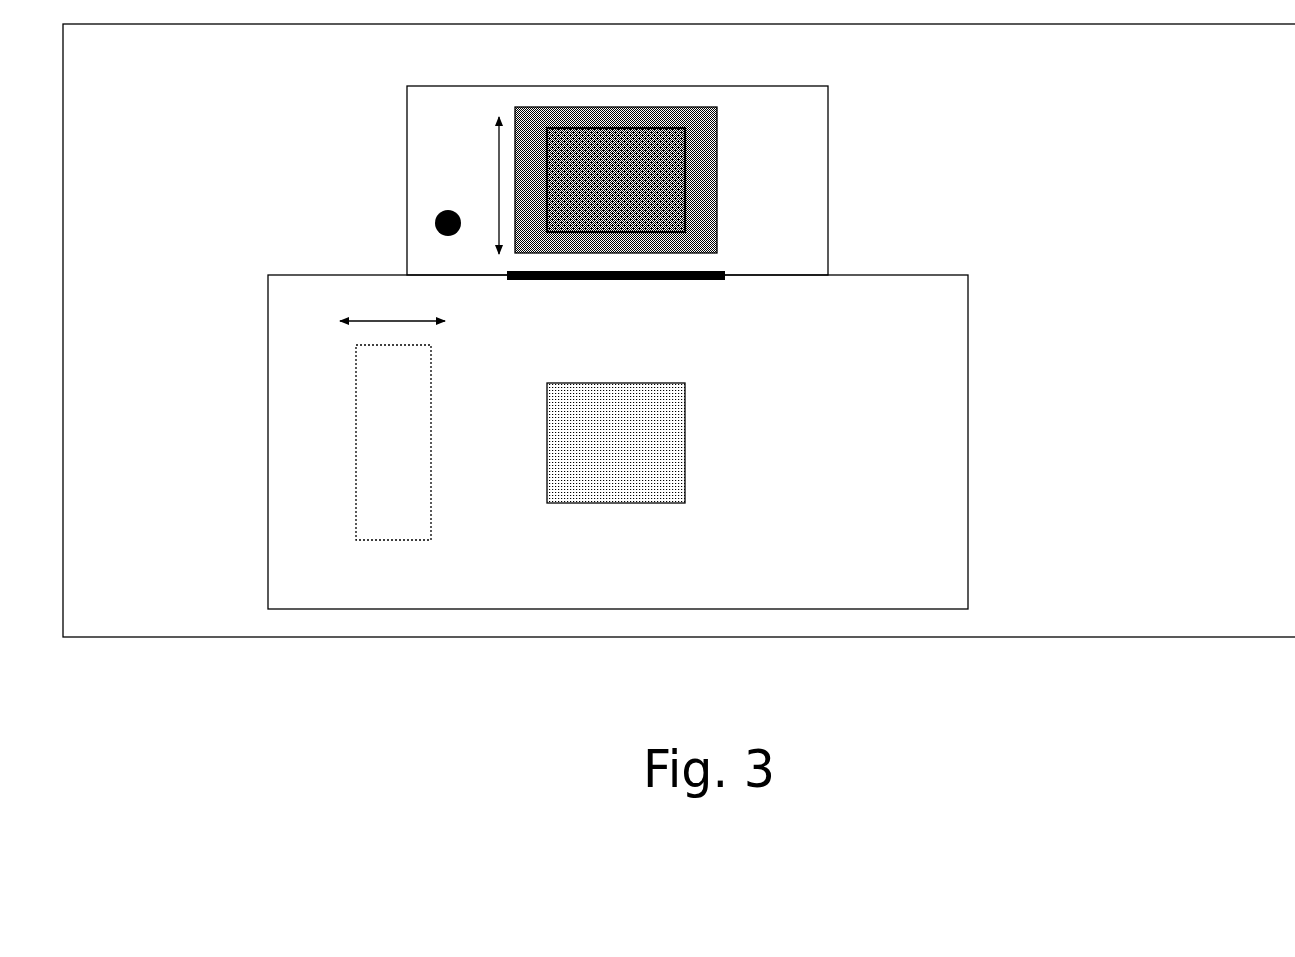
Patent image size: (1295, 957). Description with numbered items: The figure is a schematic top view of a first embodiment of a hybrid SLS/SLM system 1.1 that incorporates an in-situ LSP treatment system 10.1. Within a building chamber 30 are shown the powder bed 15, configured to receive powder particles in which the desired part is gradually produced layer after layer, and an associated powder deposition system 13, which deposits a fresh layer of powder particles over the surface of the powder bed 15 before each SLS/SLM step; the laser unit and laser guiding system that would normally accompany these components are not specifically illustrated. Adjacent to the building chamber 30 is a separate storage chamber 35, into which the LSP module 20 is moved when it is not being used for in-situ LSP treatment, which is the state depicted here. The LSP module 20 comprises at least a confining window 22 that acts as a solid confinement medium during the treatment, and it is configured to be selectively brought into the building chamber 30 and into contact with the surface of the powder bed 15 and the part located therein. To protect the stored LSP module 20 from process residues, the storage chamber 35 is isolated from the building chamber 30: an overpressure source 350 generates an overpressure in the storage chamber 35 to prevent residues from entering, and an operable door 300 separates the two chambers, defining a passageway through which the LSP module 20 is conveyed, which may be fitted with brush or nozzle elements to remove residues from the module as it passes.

The hybrid SLS/SLM system 1.1 is at (125, 68).
The in-situ LSP treatment system 10.1 is at (1100, 212).
The storage chamber 35 is at (802, 125).
The LSP module 20 is at (722, 171).
The confining window 22 is at (595, 162).
The overpressure source 350 is at (448, 210).
The operable door 300 is at (677, 282).
The building chamber 30 is at (926, 587).
The powder deposition system 13 is at (372, 416).
The powder bed 15 is at (672, 410).